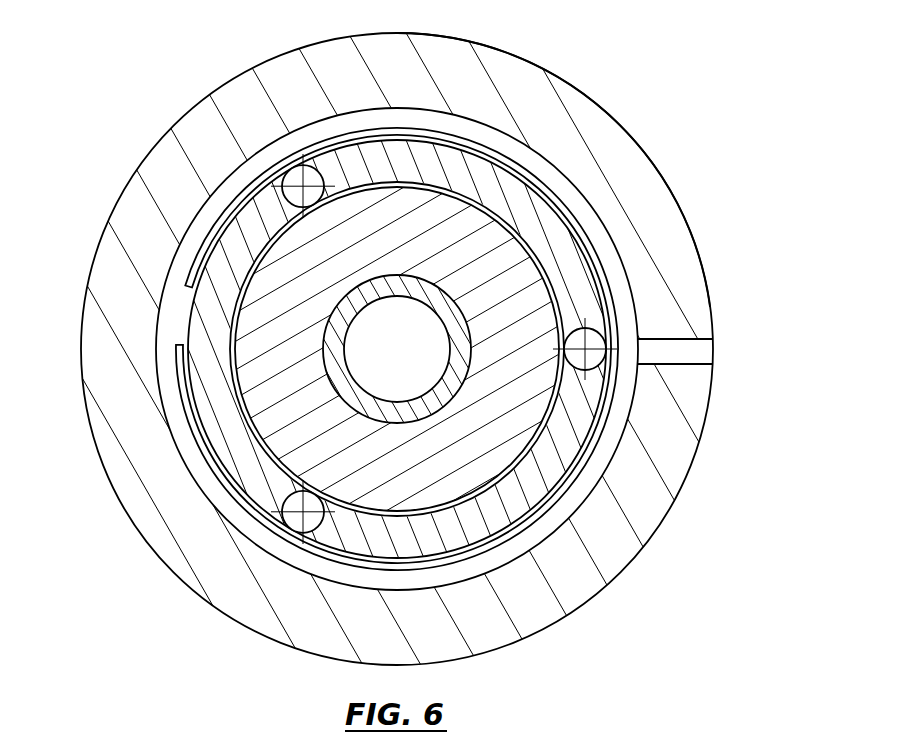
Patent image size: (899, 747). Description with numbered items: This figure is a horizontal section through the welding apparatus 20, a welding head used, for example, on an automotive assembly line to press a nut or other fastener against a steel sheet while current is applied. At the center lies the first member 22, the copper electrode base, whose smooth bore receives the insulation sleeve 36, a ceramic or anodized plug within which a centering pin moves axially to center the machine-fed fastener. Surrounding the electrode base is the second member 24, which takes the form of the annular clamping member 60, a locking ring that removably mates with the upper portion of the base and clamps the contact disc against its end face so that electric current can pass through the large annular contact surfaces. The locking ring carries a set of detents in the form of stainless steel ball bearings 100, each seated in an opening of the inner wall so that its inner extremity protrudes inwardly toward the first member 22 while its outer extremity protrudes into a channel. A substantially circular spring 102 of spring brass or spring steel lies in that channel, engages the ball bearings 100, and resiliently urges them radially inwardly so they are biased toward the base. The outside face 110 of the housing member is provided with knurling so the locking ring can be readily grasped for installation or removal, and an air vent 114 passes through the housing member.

The welding apparatus 20 is at (178, 45).
The first member 22 is at (473, 242).
The second member 24 is at (148, 157).
The insulation sleeve 36 is at (465, 360).
The clamping member 60 is at (188, 118).
The ball bearings 100 is at (281, 492).
The spring 102 is at (615, 398).
The outside face 110 is at (684, 217).
The air vent 114 is at (708, 352).